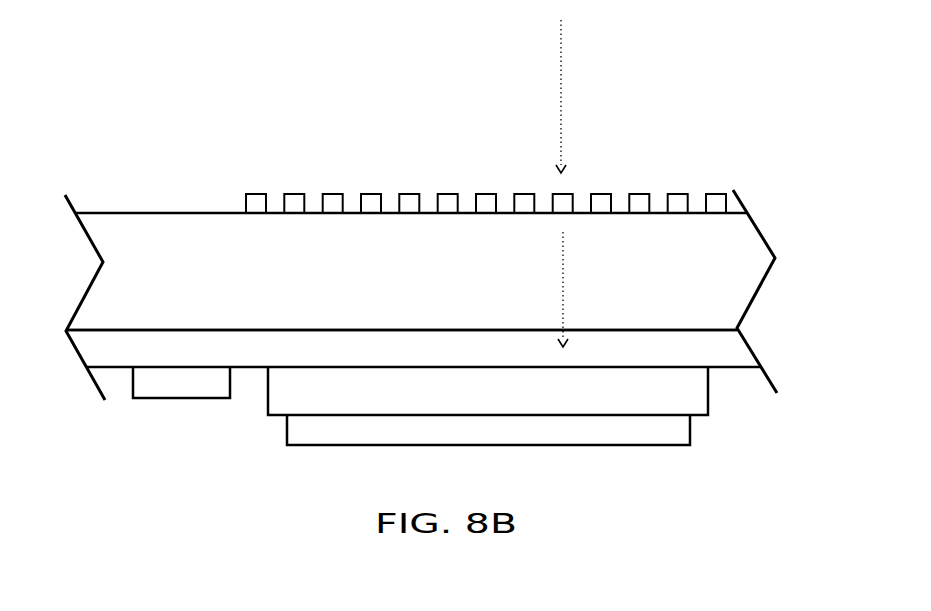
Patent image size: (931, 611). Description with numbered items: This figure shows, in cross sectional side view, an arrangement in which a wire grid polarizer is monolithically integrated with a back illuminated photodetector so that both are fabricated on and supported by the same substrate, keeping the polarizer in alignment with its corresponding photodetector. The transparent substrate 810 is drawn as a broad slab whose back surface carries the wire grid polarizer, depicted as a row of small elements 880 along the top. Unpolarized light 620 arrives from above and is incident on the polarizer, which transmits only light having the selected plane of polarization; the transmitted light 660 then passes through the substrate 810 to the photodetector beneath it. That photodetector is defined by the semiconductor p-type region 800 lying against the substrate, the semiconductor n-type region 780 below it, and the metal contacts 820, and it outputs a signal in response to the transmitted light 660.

The microlens array / patterned elements 880 is at (448, 203).
The unpolarized light 620 is at (588, 96).
The transmitted light 660 is at (590, 289).
The transparent substrate 810 is at (421, 295).
The semiconductor p-type region 800 is at (697, 345).
The metal contacts 820 is at (307, 437).
The semiconductor n-type region 780 is at (679, 394).